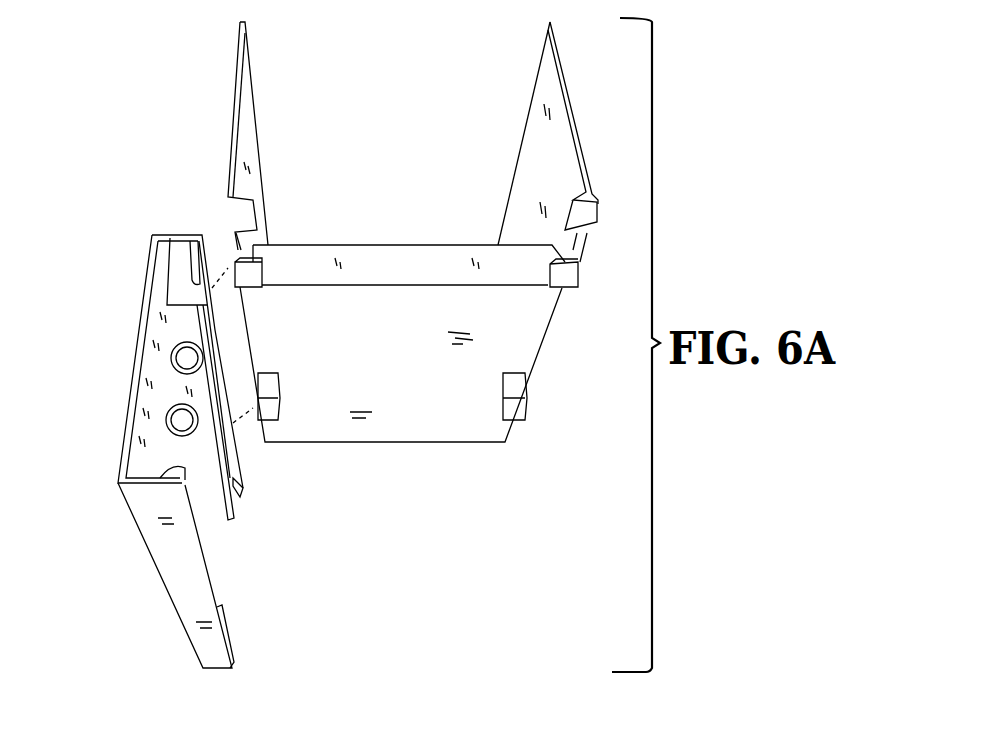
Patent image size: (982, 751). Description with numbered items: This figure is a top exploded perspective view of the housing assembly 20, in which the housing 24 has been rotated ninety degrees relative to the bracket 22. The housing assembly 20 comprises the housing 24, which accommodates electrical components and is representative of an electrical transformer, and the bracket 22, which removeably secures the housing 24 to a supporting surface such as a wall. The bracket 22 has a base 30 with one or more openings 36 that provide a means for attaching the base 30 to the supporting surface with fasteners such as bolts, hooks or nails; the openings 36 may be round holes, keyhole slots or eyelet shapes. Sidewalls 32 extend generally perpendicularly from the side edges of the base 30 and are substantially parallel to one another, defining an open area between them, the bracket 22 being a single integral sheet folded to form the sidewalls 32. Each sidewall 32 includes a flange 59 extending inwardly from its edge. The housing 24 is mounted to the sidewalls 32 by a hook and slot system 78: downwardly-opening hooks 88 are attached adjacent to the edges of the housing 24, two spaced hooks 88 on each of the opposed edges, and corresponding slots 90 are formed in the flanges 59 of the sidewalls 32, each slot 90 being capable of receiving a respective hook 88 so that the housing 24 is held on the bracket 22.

The housing assembly 20 is at (112, 140).
The bracket 22 is at (126, 290).
The housing 24 is at (218, 125).
The base 30 is at (122, 468).
The sidewall 32 is at (184, 254).
The opening 36 is at (148, 384).
The flange 59 is at (213, 567).
The hook and slot system 78 is at (233, 430).
The hook 88 is at (250, 287).
The slot 90 is at (190, 238).